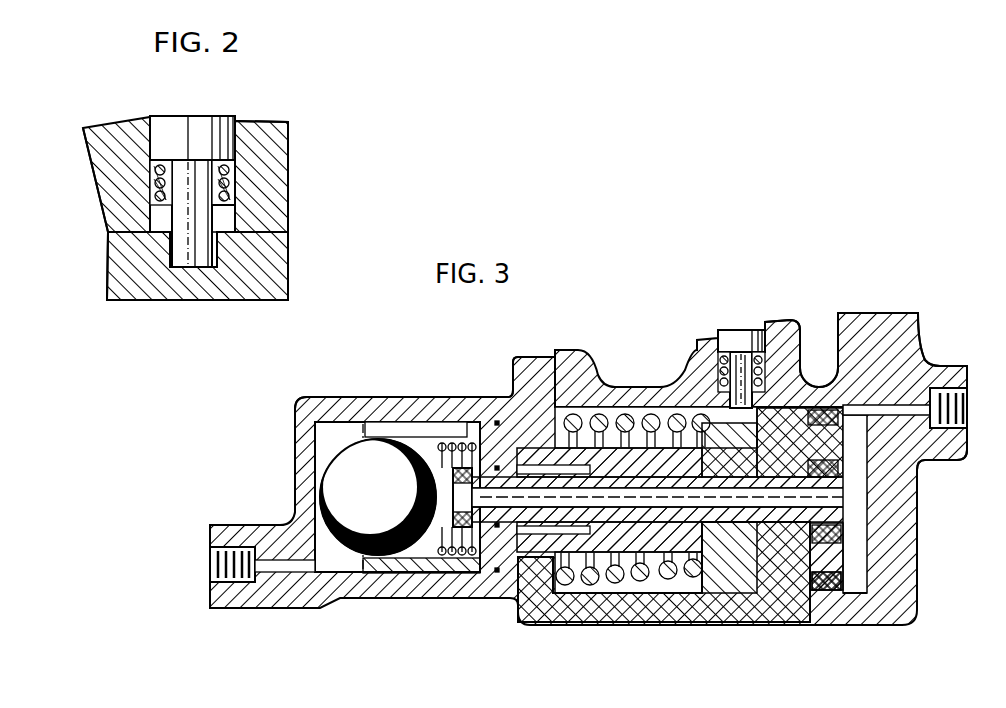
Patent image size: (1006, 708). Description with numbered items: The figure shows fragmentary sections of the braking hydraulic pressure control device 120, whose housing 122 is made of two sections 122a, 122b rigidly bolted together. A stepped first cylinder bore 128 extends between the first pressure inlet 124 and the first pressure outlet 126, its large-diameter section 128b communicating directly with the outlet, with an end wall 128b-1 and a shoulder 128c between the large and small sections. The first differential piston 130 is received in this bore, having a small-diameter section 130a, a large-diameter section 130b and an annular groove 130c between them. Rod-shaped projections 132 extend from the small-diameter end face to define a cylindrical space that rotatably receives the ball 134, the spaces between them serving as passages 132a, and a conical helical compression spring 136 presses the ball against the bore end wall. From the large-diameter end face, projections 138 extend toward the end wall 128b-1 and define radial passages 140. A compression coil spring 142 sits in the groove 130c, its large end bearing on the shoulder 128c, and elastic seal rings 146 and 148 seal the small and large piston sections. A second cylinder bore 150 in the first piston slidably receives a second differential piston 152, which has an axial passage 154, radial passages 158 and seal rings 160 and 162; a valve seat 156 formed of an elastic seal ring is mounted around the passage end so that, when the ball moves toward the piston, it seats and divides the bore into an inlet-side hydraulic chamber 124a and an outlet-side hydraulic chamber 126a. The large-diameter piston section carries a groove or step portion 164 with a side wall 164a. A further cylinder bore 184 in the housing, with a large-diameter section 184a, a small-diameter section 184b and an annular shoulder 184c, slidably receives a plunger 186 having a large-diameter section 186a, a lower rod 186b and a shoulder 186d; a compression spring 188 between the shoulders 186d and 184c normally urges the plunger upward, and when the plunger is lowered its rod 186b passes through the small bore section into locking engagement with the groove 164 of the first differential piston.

In FIG. 3, the braking hydraulic pressure control device 120 is at (618, 326).
In FIG. 3, the housing 122 is at (375, 397).
In FIG. 3, the housing section 122a is at (300, 412).
In FIG. 2, the housing section 122b is at (268, 128).
In FIG. 3, the housing section 122b is at (920, 318).
In FIG. 3, the first pressure inlet 124 is at (292, 570).
In FIG. 3, the inlet-side hydraulic chamber 124a is at (325, 545).
In FIG. 3, the first pressure outlet 126 is at (898, 402).
In FIG. 3, the outlet-side hydraulic chamber 126a is at (917, 478).
In FIG. 3, the first cylinder bore 128 is at (904, 648).
In FIG. 3, the large-diameter section of first cylinder bore 128b is at (797, 590).
In FIG. 3, the end wall of large-diameter cylinder bore section 128b-1 is at (917, 505).
In FIG. 3, the shoulder 128c is at (565, 395).
In FIG. 2, the first differential piston 130 is at (108, 249).
In FIG. 3, the first differential piston 130 is at (748, 622).
In FIG. 3, the small-diameter section of first differential piston 130a is at (529, 579).
In FIG. 2, the large-diameter section of first differential piston 130b is at (178, 300).
In FIG. 3, the large-diameter section of first differential piston 130b is at (772, 578).
In FIG. 3, the annular groove of first differential piston 130c is at (690, 600).
In FIG. 3, the rod-shaped projections 132 is at (385, 575).
In FIG. 3, the passages 132a is at (418, 430).
In FIG. 3, the ball 134 is at (340, 470).
In FIG. 3, the conical helical compression spring 136 is at (424, 566).
In FIG. 3, the projections 138 is at (845, 568).
In FIG. 3, the passages 140 is at (858, 442).
In FIG. 3, the compression coil spring 142 is at (656, 518).
In FIG. 3, the elastic seal ring 146 is at (490, 578).
In FIG. 3, the elastic seal ring 148 is at (818, 593).
In FIG. 3, the second cylinder bore 150 is at (751, 556).
In FIG. 3, the second differential piston 152 is at (684, 474).
In FIG. 3, the axial passage 154 is at (622, 505).
In FIG. 3, the valve seat 156 is at (425, 476).
In FIG. 3, the radial passages 158 is at (882, 512).
In FIG. 3, the elastic seal ring 160 is at (520, 440).
In FIG. 3, the elastic seal ring 162 is at (815, 550).
In FIG. 2, the annular groove 164 is at (216, 255).
In FIG. 3, the annular groove 164 is at (749, 466).
In FIG. 3, the side wall of groove 164a is at (800, 442).
In FIG. 3, the cylinder bore 184 is at (768, 333).
In FIG. 2, the large-diameter section of cylinder bore 184a is at (236, 146).
In FIG. 2, the small-diameter section of cylinder bore 184b is at (213, 229).
In FIG. 2, the annular shoulder 184c is at (236, 183).
In FIG. 2, the plunger 186 is at (270, 99).
In FIG. 3, the plunger 186 is at (735, 335).
In FIG. 2, the large-diameter section of plunger 186a is at (162, 130).
In FIG. 2, the lower rod of plunger 186b is at (180, 250).
In FIG. 3, the lower rod of plunger 186b is at (702, 365).
In FIG. 2, the shoulder of plunger 186d is at (148, 170).
In FIG. 2, the compression spring 188 is at (150, 187).
In FIG. 3, the compression spring 188 is at (755, 378).